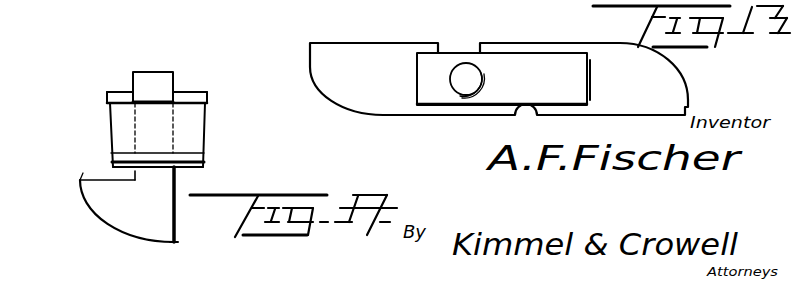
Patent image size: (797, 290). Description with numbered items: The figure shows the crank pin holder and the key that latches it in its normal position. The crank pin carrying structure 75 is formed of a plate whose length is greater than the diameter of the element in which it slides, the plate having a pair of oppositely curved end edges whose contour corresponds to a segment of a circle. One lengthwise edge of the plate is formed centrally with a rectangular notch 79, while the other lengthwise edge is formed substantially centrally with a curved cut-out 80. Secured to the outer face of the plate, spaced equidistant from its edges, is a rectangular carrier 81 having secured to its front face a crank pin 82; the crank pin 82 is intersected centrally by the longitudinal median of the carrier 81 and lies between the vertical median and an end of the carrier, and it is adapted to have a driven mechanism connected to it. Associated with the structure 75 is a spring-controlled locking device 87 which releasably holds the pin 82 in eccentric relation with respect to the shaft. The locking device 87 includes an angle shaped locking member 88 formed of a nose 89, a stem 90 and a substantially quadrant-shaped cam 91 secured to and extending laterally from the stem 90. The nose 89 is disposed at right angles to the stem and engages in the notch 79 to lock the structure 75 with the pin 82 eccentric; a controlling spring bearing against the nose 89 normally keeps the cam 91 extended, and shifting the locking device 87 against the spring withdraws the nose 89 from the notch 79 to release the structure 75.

In FIG. 14, the crank pin carrying structure 75 is at (195, 137).
In FIG. 13, the crank pin carrying structure 75 is at (668, 78).
In FIG. 14, the rectangular notch 79 is at (148, 102).
In FIG. 13, the rectangular notch 79 is at (445, 50).
In FIG. 13, the curved cut-out 80 is at (518, 116).
In FIG. 13, the rectangular carrier 81 is at (543, 63).
In FIG. 13, the crank pin 82 is at (466, 72).
In FIG. 14, the locking device 87 is at (150, 69).
In FIG. 14, the angle shaped locking member 88 is at (137, 171).
In FIG. 14, the nose 89 is at (167, 85).
In FIG. 14, the stem 90 is at (177, 173).
In FIG. 14, the quadrant-shaped cam 91 is at (130, 218).